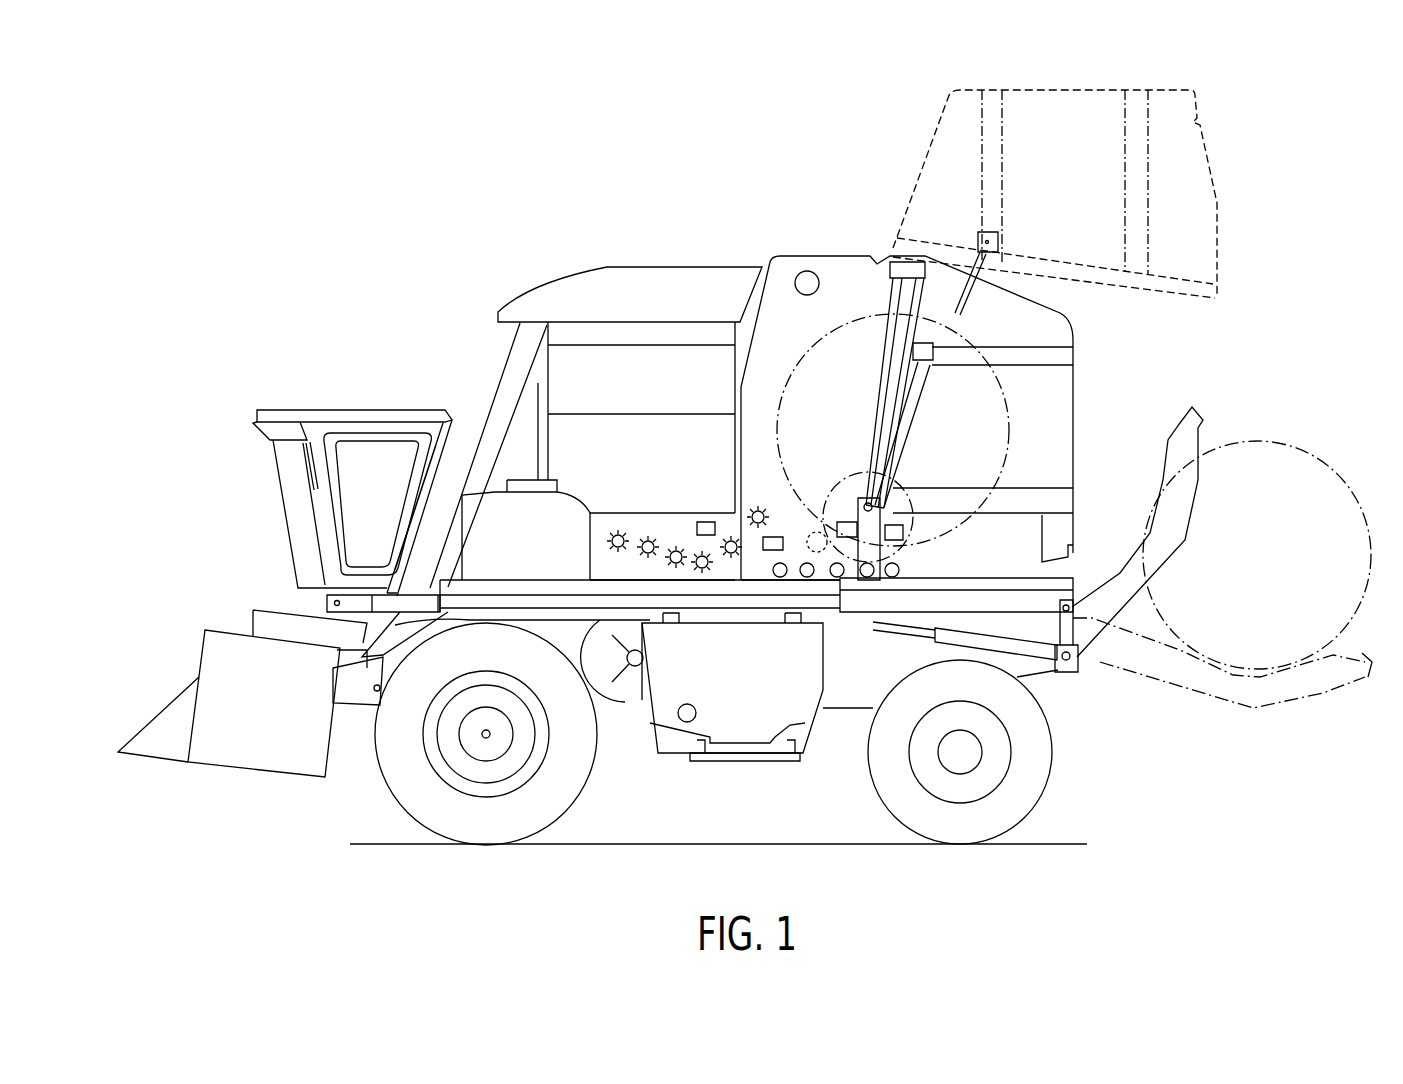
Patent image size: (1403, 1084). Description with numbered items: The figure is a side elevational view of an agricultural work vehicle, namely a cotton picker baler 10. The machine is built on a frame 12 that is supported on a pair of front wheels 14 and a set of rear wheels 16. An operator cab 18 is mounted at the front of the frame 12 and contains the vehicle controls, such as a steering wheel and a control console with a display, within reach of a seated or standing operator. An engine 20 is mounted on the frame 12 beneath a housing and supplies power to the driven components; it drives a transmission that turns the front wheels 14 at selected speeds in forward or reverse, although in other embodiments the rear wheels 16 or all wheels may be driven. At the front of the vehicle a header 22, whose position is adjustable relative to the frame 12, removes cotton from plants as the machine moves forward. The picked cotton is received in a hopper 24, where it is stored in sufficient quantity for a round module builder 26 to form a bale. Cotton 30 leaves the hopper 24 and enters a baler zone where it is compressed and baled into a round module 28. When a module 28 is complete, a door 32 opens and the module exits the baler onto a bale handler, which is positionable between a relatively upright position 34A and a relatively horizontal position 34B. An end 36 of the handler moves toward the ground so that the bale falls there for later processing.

The cotton picker baler 10 is at (238, 289).
The frame 12 is at (1018, 593).
The front wheels 14 is at (490, 830).
The rear wheels 16 is at (955, 830).
The operator cab 18 is at (292, 410).
The engine 20 is at (665, 705).
The header 22 is at (252, 750).
The hopper 24 is at (657, 340).
The round module builder 26 is at (848, 272).
The round module 28 is at (797, 385).
The cotton 30 is at (660, 535).
The door 32 is at (1067, 110).
The relatively upright position 34A is at (1183, 423).
The relatively horizontal position 34B is at (1287, 692).
The end 36 is at (1365, 650).